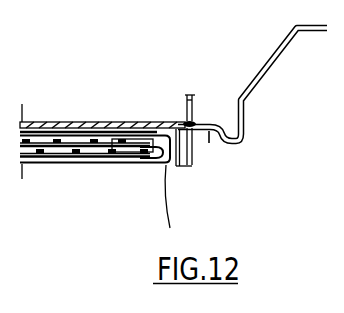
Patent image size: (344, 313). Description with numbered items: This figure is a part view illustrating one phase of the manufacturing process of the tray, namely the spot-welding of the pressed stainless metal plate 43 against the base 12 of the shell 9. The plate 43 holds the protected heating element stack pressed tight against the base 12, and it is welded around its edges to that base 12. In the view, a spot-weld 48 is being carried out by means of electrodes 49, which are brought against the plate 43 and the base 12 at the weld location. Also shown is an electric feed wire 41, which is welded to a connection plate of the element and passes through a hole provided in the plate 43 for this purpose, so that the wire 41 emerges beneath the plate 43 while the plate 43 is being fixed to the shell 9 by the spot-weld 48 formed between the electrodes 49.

The shell 9 is at (254, 86).
The base 12 is at (68, 124).
The electric feed wire 41 is at (167, 170).
The pressed stainless metal plate 43 is at (87, 165).
The spot-weld 48 is at (186, 121).
The electrodes 49 is at (192, 106).